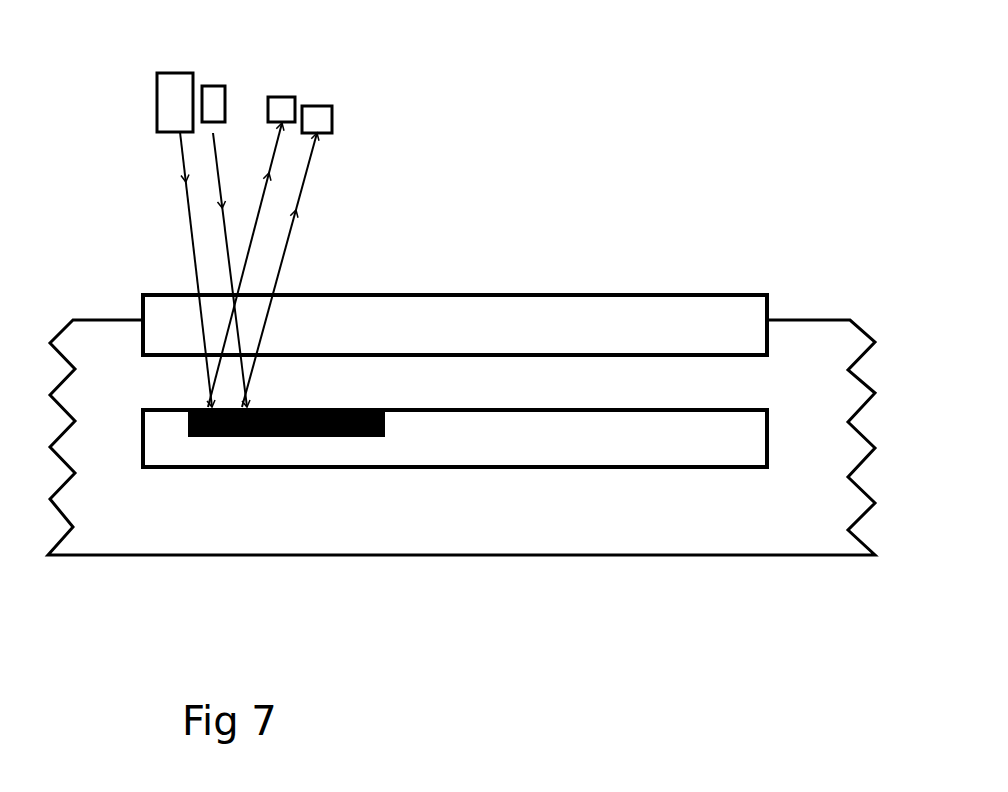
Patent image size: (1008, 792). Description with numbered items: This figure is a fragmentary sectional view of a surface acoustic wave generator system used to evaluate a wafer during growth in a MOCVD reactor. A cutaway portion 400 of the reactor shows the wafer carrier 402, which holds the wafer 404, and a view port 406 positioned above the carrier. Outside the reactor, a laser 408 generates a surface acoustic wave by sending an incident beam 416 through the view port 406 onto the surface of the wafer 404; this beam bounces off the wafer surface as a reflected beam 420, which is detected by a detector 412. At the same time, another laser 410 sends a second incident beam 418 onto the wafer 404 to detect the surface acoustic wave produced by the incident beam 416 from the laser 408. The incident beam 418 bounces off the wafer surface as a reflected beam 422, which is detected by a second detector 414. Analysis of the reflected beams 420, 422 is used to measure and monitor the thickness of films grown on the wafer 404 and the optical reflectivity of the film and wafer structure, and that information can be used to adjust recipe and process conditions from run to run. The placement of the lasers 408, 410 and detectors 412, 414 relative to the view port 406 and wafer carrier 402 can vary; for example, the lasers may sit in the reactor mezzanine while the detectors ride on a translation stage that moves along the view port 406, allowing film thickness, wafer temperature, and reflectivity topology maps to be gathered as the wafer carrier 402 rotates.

The cutaway portion 400 is at (637, 533).
The wafer carrier 402 is at (720, 455).
The wafer 404 is at (365, 437).
The view port 406 is at (707, 317).
The laser 408 is at (165, 103).
The laser 410 is at (215, 83).
The detector 412 is at (282, 97).
The detector 414 is at (322, 110).
The incident beam 416 is at (185, 182).
The incident beam 418 is at (220, 208).
The reflected beam 420 is at (270, 173).
The reflected beam 422 is at (298, 210).